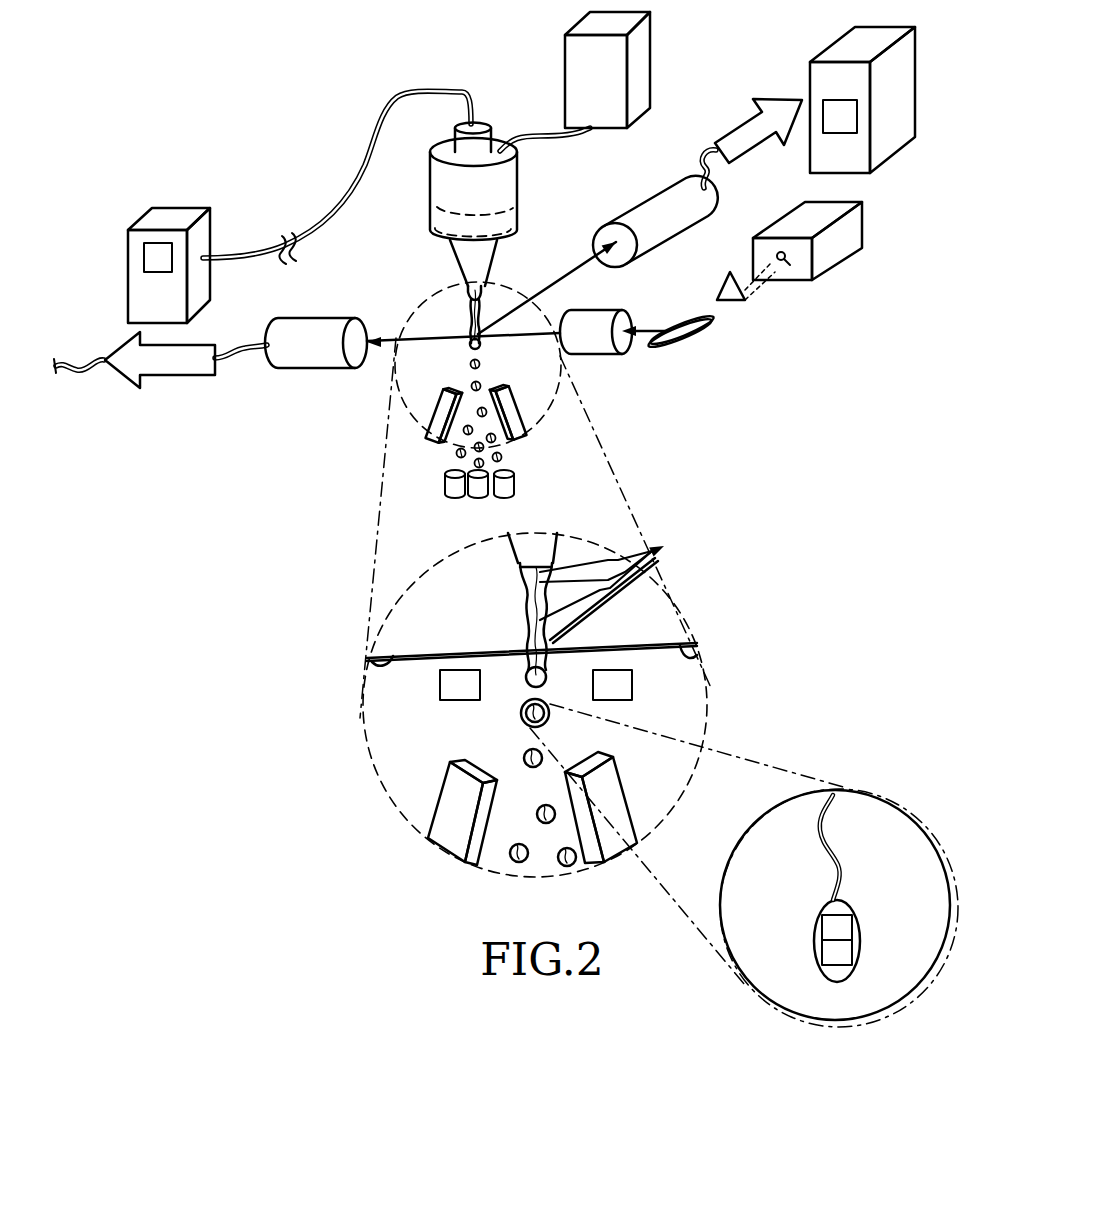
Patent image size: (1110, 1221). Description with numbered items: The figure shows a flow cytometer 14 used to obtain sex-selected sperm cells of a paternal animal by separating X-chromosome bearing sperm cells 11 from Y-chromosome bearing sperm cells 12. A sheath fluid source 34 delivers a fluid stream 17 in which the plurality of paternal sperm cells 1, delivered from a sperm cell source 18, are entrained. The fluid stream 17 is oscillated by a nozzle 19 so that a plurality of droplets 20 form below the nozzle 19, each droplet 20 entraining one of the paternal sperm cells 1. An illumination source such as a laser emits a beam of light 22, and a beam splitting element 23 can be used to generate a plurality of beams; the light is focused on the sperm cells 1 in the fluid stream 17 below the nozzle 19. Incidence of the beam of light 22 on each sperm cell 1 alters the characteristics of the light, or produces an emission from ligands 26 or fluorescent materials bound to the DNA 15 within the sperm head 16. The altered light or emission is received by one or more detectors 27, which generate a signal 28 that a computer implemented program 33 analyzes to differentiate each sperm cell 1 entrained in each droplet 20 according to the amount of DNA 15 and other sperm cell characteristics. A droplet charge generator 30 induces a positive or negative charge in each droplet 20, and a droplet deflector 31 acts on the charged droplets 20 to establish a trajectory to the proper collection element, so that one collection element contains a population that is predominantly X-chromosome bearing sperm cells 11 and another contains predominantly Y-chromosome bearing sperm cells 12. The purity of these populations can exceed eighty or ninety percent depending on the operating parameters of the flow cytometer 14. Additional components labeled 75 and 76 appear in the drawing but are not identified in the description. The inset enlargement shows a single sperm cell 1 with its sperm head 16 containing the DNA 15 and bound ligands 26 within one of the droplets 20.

The flow cytometer 14 is at (280, 96).
The sperm cell source 18 is at (169, 265).
The sheath fluid source 34 is at (607, 70).
The computer implemented program 33 is at (862, 100).
The signal 28 is at (453, 243).
The detectors 27 is at (318, 318).
The excitation light source 76 is at (603, 313).
The beam splitting element 23 is at (561, 315).
The light source unit 75 is at (834, 261).
The beam of light 22 is at (707, 306).
The nozzle 19 is at (482, 260).
The fluid stream 17 is at (468, 306).
The paternal sperm cells 1 is at (866, 890).
The ligands 26 is at (837, 939).
The DNA 15 is at (837, 954).
The sperm head 16 is at (818, 960).
The droplets 20 is at (468, 388).
The droplet deflector 31 is at (432, 437).
The X-chromosome bearing sperm cells 11 is at (457, 456).
The Y-chromosome bearing sperm cells 12 is at (500, 458).
The droplet charge generator 30 is at (536, 685).